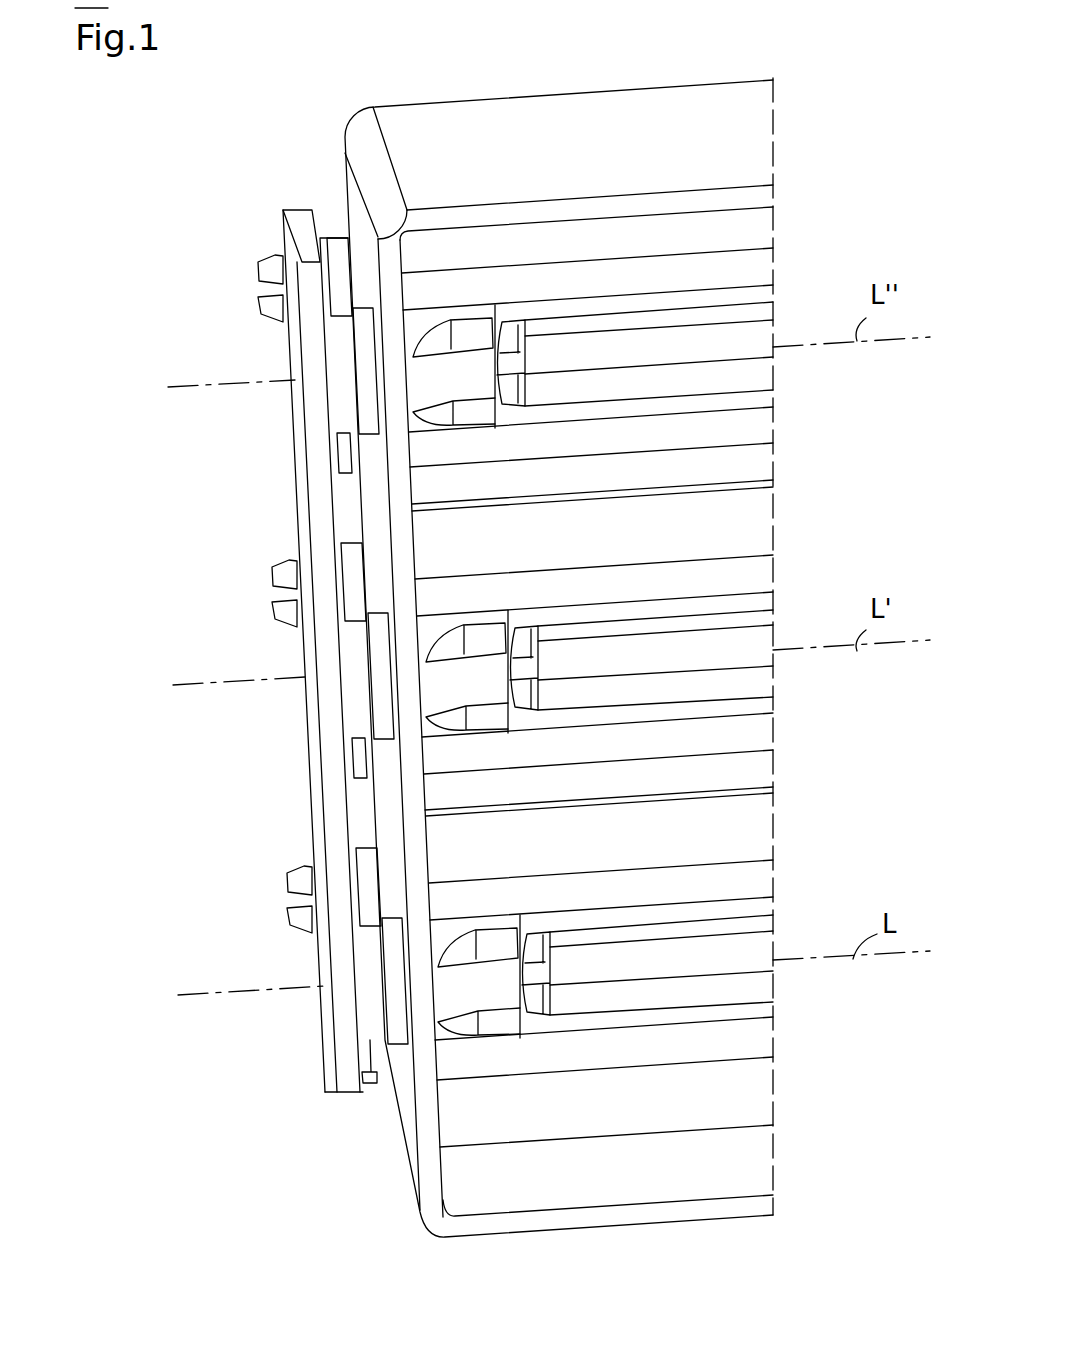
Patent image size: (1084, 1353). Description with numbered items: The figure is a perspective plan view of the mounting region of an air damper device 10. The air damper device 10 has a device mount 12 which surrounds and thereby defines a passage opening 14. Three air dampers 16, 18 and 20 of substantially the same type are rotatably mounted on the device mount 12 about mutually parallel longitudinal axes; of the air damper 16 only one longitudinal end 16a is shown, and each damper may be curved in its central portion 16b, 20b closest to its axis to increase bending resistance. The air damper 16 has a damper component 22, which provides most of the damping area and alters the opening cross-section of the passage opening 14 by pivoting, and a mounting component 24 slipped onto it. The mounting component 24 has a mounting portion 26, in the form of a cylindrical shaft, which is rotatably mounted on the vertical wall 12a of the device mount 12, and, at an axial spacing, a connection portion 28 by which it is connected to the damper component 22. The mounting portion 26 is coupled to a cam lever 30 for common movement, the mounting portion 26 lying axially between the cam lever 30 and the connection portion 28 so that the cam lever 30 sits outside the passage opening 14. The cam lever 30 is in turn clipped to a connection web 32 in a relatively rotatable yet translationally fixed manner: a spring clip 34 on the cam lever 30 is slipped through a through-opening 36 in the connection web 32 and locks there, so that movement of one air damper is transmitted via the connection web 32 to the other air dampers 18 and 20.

The air damper device 10 is at (258, 114).
The device mount 12 is at (530, 120).
The wall 12a is at (404, 546).
The passage opening 14 is at (476, 1192).
The air damper 16 is at (650, 948).
The longitudinal end 16a is at (493, 948).
The central portion 16b is at (740, 948).
The air damper 18 is at (762, 581).
The air damper 20 is at (635, 340).
The central portion 20b is at (747, 345).
The damper component 22 is at (745, 1088).
The mounting component 24 is at (490, 1001).
The mounting portion 26 is at (387, 1045).
The connection portion 28 is at (495, 1022).
The cam lever 30 is at (373, 1084).
The connection web 32 is at (325, 807).
The spring clip 34 is at (285, 946).
The through-opening 36 is at (318, 902).